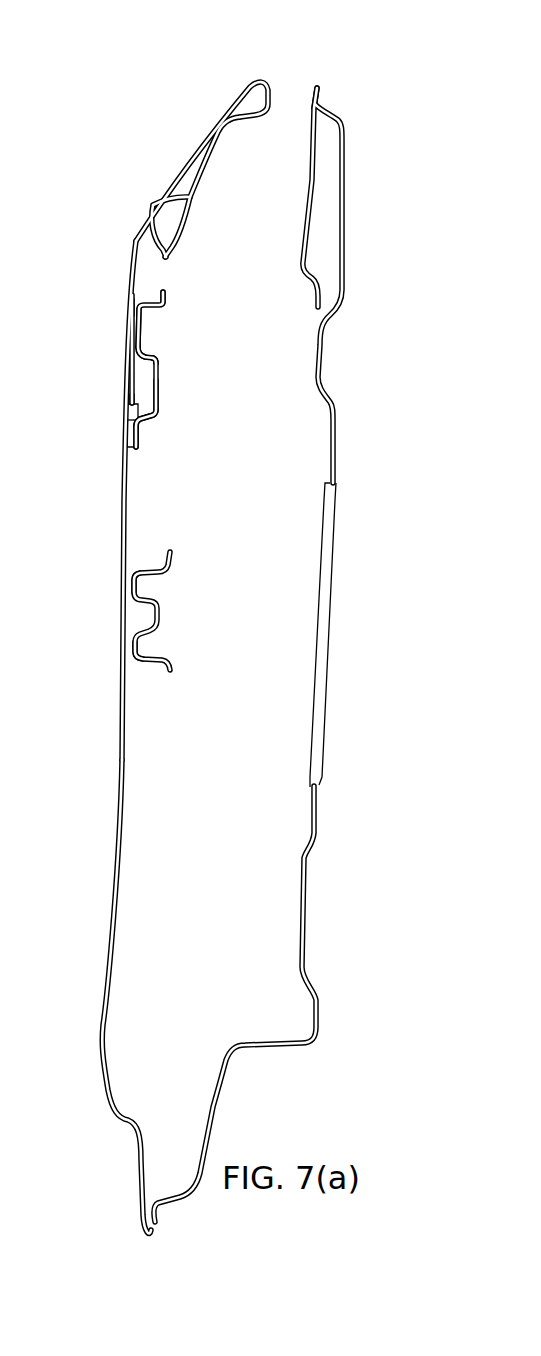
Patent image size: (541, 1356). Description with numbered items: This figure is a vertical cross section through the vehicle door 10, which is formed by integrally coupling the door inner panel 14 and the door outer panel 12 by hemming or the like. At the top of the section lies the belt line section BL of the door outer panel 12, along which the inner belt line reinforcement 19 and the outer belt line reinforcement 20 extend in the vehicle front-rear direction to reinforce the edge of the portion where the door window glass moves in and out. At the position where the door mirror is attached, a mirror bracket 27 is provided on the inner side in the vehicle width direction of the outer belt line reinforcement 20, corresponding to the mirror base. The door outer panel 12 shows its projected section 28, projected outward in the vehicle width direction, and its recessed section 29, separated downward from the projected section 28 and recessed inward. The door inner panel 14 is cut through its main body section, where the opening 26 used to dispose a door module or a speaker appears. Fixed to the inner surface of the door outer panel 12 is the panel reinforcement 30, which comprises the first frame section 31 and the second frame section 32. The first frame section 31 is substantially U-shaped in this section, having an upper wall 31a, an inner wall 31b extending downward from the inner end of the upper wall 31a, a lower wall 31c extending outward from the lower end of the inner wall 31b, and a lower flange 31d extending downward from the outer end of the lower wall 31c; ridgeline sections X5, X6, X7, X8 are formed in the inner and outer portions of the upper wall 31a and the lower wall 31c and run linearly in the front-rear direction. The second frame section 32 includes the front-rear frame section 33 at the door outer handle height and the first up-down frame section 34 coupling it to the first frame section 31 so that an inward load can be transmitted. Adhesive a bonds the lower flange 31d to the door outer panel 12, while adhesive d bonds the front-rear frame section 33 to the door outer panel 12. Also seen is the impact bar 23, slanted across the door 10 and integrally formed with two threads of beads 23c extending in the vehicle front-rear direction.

The belt line section BL is at (319, 80).
The door 10 is at (231, 619).
The door outer panel 12 is at (124, 780).
The door inner panel 14 is at (339, 423).
The inner belt line reinforcement 19 is at (315, 184).
The outer belt line reinforcement 20 is at (150, 211).
The impact bar 23 is at (142, 611).
The beads 23c is at (133, 585).
The opening 26 is at (329, 634).
The mirror bracket 27 is at (213, 168).
The projected section 28 is at (126, 245).
The recessed section 29 is at (113, 708).
The panel reinforcement 30 is at (275, 613).
The first frame section 31 is at (142, 417).
The upper wall 31a is at (157, 360).
The inner wall 31b is at (159, 406).
The lower wall 31c is at (145, 420).
The lower flange 31d is at (140, 432).
The second frame section 32 is at (156, 329).
The front-rear frame section 33 is at (167, 298).
The first up-down frame section 34 is at (152, 318).
The ridgeline section X5 is at (143, 363).
The ridgeline section X6 is at (140, 366).
The ridgeline section X7 is at (143, 405).
The ridgeline section X8 is at (130, 403).
The adhesive a is at (128, 423).
The adhesive d is at (129, 308).